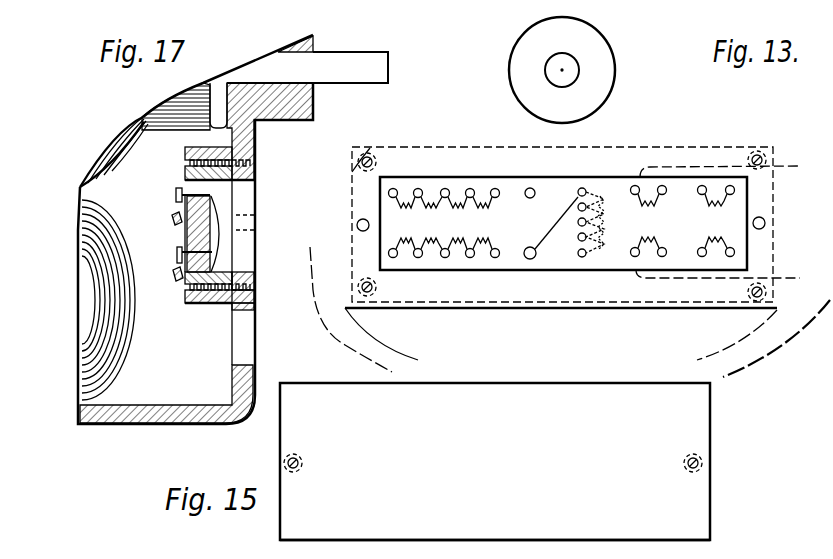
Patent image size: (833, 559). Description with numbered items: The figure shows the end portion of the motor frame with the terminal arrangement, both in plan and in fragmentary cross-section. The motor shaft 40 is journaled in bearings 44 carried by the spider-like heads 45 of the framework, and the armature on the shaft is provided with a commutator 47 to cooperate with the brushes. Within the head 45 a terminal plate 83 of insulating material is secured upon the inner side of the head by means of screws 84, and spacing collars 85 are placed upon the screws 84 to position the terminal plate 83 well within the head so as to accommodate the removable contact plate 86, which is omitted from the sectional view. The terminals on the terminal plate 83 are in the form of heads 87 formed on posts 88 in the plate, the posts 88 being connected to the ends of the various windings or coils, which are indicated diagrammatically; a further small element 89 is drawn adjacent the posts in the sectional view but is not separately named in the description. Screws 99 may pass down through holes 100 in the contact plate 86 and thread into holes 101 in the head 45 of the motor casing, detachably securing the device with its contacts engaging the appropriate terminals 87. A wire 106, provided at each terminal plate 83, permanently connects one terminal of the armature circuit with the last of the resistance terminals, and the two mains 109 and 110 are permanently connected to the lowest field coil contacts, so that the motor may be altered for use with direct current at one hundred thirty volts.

In FIG. 17, the motor shaft 40 is at (352, 58).
In FIG. 13, the motor shaft 40 is at (561, 62).
In FIG. 17, the bearings 44 is at (270, 118).
In FIG. 13, the bearings 44 is at (601, 63).
In FIG. 17, the spider-like heads 45 is at (254, 336).
In FIG. 17, the commutator 47 is at (158, 142).
In FIG. 17, the terminal plate 83 is at (190, 305).
In FIG. 17, the screws 84 is at (186, 156).
In FIG. 15, the screws 84 is at (369, 156).
In FIG. 17, the spacing collars 85 is at (218, 305).
In FIG. 15, the contact plate 86 is at (323, 530).
In FIG. 17, the heads 87 is at (207, 214).
In FIG. 17, the posts 88 is at (189, 191).
In FIG. 17, the brush clip 89 is at (177, 216).
In FIG. 15, the screws 99 is at (299, 461).
In FIG. 15, the holes 100 is at (292, 467).
In FIG. 17, the holes 101 is at (244, 233).
In FIG. 15, the holes 101 is at (559, 237).
In FIG. 15, the wire 106 is at (556, 235).
In FIG. 15, the main 109 is at (718, 285).
In FIG. 15, the main 110 is at (720, 162).